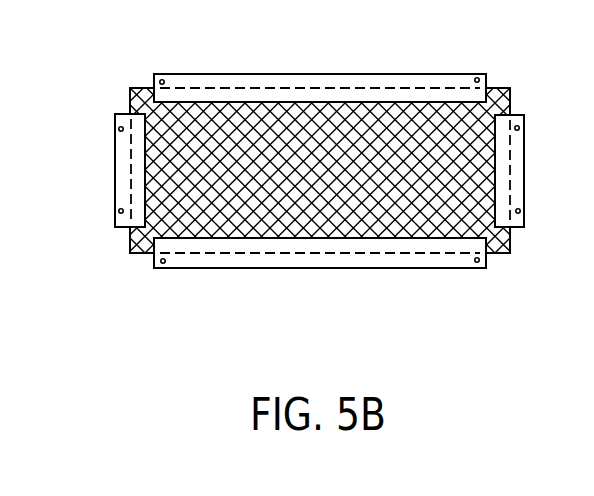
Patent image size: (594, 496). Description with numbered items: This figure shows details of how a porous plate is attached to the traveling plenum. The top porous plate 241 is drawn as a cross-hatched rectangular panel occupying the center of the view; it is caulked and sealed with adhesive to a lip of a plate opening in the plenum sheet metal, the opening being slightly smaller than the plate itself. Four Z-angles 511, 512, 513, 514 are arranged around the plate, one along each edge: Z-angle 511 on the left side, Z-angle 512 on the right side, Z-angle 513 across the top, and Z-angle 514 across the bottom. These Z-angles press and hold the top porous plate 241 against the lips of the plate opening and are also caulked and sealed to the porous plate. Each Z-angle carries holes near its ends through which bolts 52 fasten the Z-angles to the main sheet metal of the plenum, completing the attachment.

The bolts 52 is at (465, 80).
The top porous plate 241 is at (297, 170).
The Z-angle 511 is at (106, 170).
The Z-angle 512 is at (533, 171).
The Z-angle 513 is at (320, 72).
The Z-angle 514 is at (320, 273).